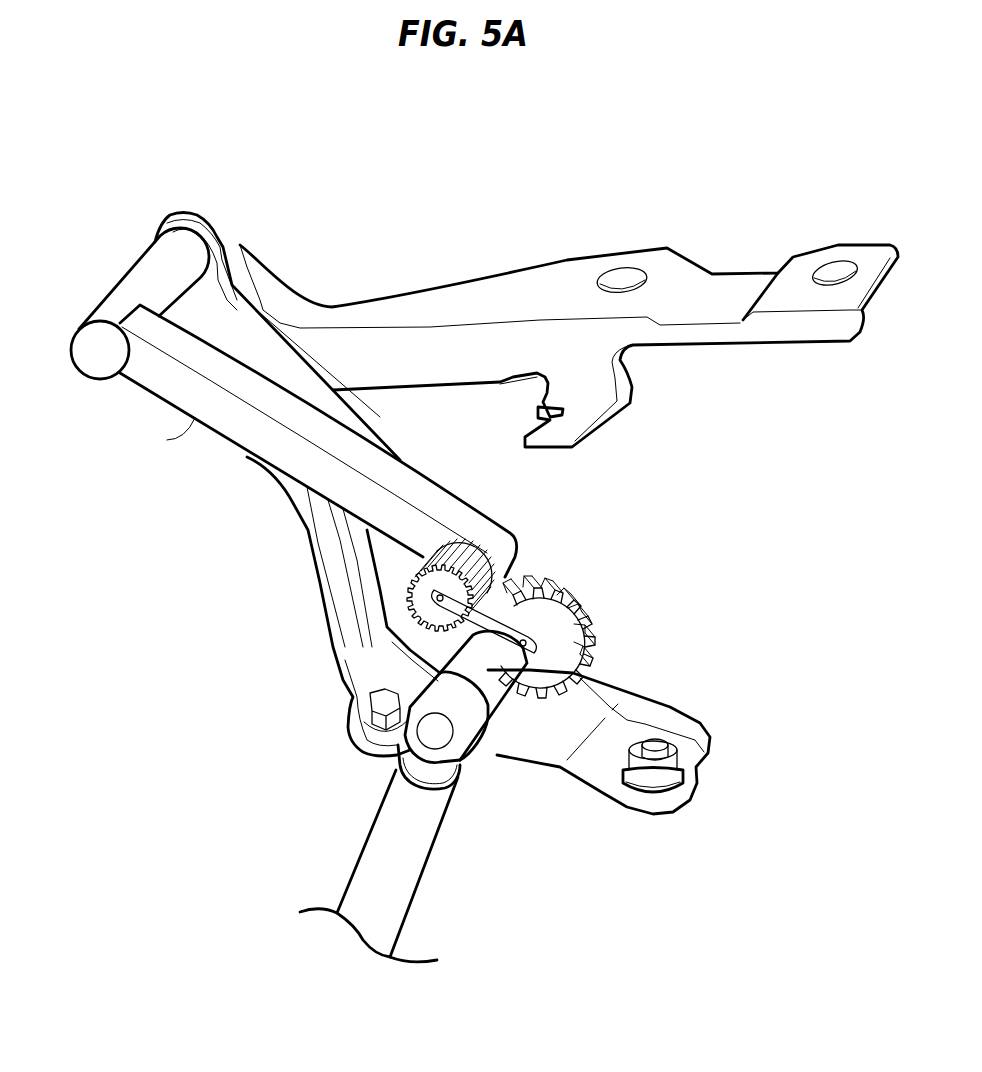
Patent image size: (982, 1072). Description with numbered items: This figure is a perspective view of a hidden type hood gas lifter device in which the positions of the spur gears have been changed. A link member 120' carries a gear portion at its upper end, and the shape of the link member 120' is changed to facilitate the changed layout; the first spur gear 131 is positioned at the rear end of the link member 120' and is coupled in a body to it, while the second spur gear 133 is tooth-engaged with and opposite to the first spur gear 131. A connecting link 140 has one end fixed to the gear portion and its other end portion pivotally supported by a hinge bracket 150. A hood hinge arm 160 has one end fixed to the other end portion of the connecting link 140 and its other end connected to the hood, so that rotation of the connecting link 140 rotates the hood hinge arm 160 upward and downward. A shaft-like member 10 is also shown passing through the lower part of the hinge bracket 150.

The steering shaft 10 is at (407, 862).
The link member 120' is at (295, 441).
The first spur gear 131 is at (548, 630).
The second spur gear 133 is at (493, 544).
The connecting link 140 is at (130, 292).
The hinge bracket 150 is at (357, 580).
The hood hinge arm 160 is at (500, 292).